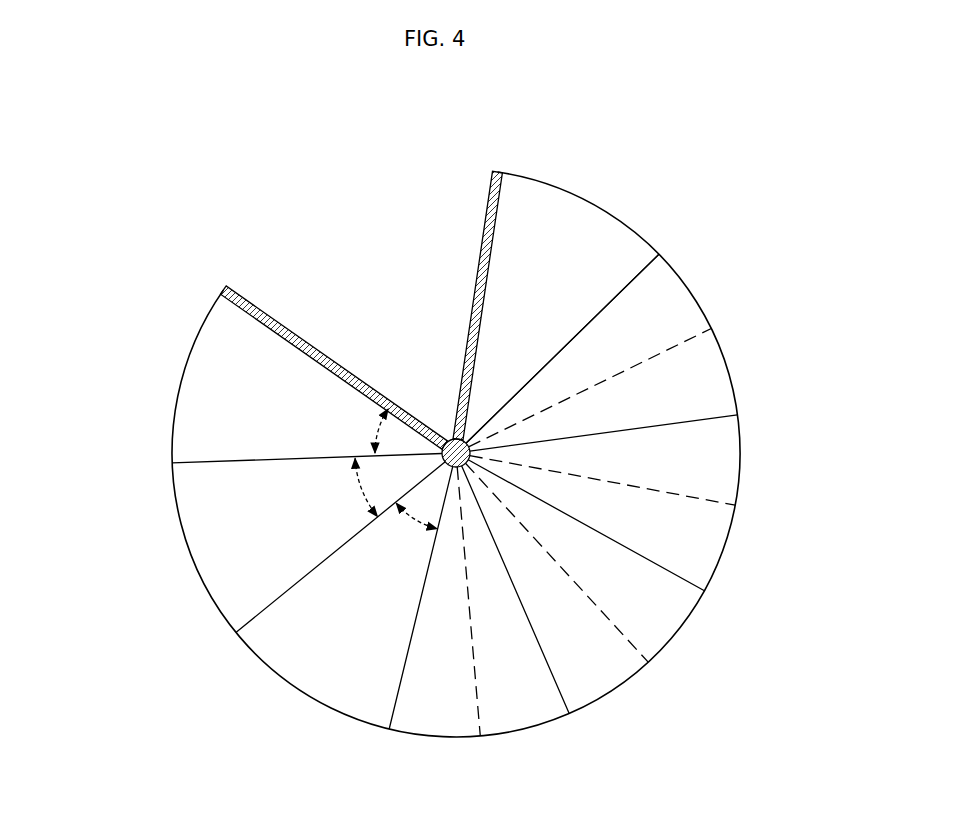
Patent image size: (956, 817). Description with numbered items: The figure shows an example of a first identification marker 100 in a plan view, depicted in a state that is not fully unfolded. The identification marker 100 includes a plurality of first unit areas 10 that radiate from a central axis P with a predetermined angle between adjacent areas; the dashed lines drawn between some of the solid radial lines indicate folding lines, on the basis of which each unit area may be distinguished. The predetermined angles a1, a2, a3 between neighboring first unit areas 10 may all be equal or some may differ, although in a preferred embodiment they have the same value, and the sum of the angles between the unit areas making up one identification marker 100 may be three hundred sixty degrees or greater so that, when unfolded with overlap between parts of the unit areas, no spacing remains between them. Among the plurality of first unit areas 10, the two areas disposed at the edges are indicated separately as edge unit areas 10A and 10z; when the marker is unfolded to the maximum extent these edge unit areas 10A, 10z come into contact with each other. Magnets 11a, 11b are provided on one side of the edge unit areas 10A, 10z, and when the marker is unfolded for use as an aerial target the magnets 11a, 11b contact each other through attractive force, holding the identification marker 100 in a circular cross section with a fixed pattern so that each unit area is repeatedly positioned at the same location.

The identification marker 100 is at (80, 246).
The first unit areas 10 is at (707, 375).
The edge first unit area 10A is at (573, 220).
The edge first unit area 10z is at (200, 395).
The magnet 11a is at (483, 168).
The magnet 11b is at (222, 290).
The central axis P is at (455, 442).
The predetermined angle a1 is at (364, 431).
The predetermined angle a2 is at (352, 487).
The predetermined angle a3 is at (414, 529).